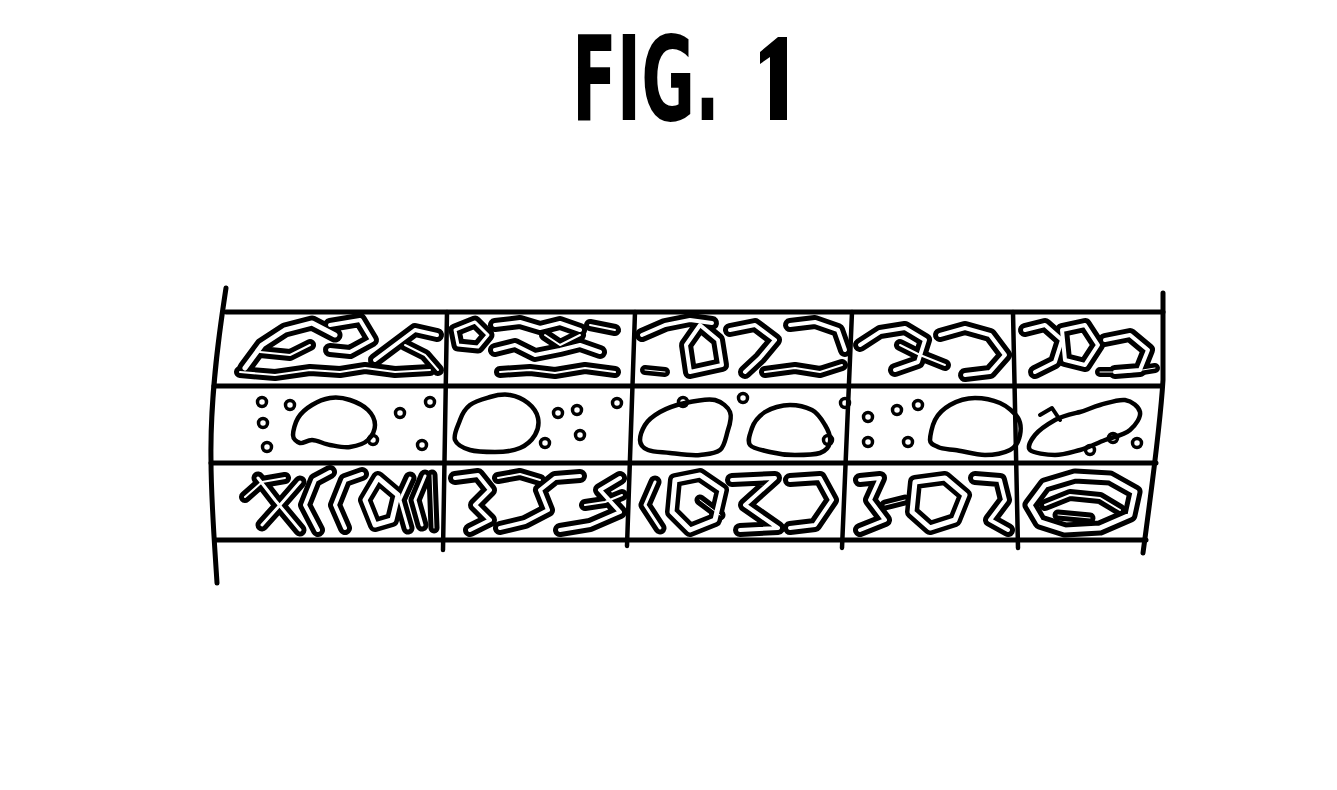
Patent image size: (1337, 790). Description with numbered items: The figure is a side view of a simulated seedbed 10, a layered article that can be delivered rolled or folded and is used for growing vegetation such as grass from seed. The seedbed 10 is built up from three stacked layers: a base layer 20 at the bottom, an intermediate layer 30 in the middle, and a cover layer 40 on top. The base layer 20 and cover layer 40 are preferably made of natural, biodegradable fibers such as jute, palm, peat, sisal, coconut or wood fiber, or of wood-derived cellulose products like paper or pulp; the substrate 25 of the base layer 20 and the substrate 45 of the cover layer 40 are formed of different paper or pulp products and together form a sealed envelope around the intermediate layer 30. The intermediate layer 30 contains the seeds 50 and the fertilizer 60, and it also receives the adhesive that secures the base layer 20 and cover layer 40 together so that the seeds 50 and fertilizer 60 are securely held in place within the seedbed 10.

The simulated seedbed 10 is at (1013, 266).
The base layer 20 is at (1180, 505).
The substrate of base layer 25 is at (692, 541).
The intermediate layer 30 is at (1180, 422).
The cover layer 40 is at (1180, 342).
The substrate of cover layer 45 is at (803, 312).
The seeds 50 is at (313, 423).
The fertilizer 60 is at (422, 450).